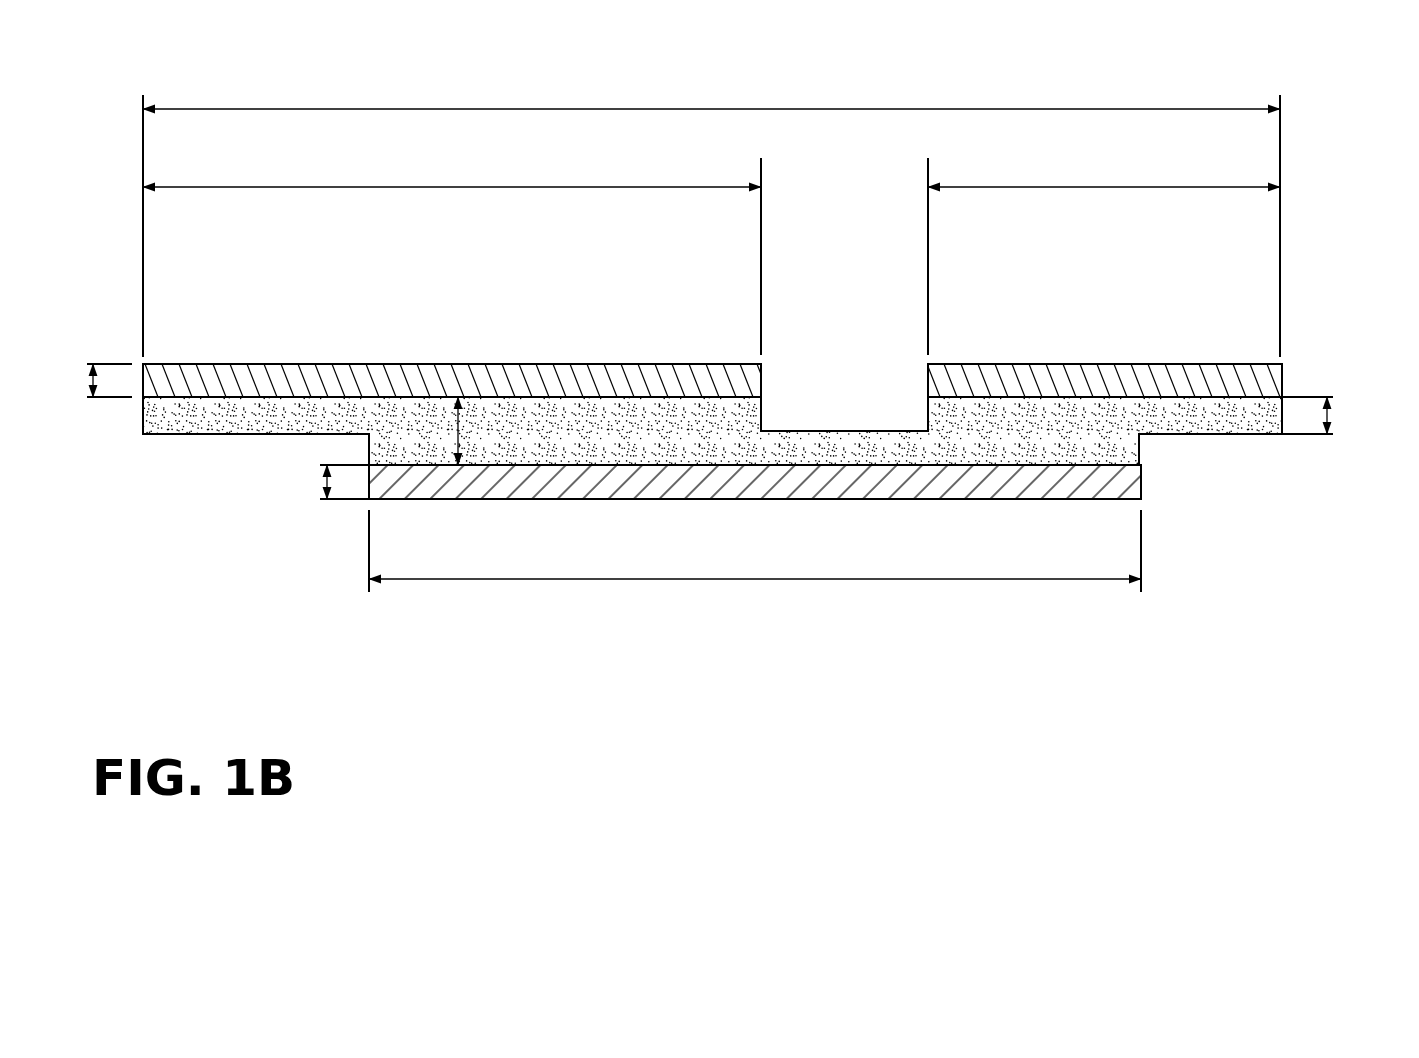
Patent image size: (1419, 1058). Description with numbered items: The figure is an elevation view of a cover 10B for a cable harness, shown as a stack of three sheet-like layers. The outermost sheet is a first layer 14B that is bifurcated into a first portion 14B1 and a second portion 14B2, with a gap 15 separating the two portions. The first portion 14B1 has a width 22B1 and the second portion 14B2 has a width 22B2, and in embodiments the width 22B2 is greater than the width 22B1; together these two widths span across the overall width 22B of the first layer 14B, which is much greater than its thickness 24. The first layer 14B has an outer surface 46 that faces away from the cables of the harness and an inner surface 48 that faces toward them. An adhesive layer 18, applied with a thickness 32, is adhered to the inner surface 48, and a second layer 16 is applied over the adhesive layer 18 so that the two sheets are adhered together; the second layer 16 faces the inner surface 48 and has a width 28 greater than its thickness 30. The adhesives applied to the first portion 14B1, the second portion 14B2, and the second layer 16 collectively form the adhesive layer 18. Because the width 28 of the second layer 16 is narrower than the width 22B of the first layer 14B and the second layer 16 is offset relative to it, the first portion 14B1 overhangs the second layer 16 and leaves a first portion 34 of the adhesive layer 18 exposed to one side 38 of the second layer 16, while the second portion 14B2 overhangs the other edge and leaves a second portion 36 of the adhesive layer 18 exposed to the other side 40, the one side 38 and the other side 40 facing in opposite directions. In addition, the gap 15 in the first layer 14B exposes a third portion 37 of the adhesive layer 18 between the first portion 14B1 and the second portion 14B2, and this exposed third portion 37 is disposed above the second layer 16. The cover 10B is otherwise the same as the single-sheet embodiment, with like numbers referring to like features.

The cover 10B is at (126, 246).
The first layer 14B is at (970, 380).
The first portion 14B1 is at (1127, 375).
The second portion 14B2 is at (552, 364).
The gap 15 is at (811, 376).
The second layer 16 is at (1105, 478).
The adhesive layer 18 is at (1112, 420).
The width 22B is at (535, 109).
The width 22B1 is at (1125, 187).
The width 22B2 is at (500, 187).
The thickness 24 is at (93, 400).
The width 28 is at (680, 580).
The thickness 30 is at (327, 493).
The thickness 32 is at (458, 432).
The first portion 34 is at (1210, 464).
The second portion 36 is at (220, 440).
The third portion 37 is at (836, 426).
The one side 38 is at (1142, 494).
The other side 40 is at (367, 483).
The outer surface 46 is at (324, 364).
The inner surface 48 is at (573, 440).